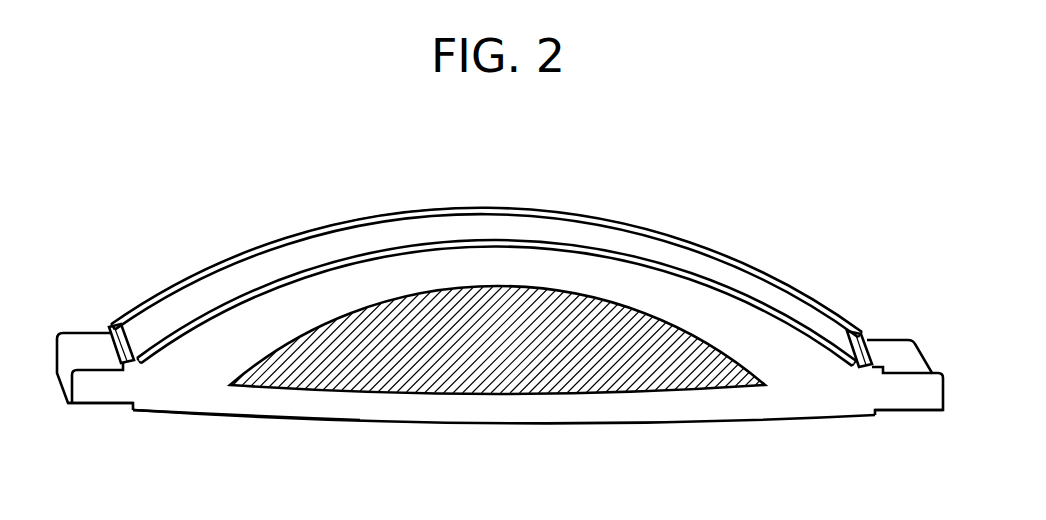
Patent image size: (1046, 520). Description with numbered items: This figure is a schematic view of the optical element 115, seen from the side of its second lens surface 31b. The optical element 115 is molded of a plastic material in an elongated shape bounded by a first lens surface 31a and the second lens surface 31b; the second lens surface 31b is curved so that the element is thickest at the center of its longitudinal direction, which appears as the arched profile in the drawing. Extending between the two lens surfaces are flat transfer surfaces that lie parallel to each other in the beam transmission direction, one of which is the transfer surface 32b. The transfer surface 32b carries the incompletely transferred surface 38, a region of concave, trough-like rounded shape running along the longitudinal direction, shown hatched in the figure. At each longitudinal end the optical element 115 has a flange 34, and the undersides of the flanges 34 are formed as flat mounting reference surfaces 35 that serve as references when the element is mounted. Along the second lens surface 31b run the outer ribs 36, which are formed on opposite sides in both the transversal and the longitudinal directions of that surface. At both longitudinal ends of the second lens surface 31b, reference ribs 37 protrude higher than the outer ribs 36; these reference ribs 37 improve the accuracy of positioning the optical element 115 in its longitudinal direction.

The optical element 115 is at (626, 215).
The first lens surface 31a is at (488, 425).
The second lens surface 31b is at (500, 213).
The transfer surface 32b is at (358, 417).
The flange 34 is at (65, 345).
The mounting reference surface 35 is at (100, 411).
The outer rib 36 is at (180, 327).
The reference rib 37 is at (109, 324).
The incompletely transferred surface 38 is at (622, 394).